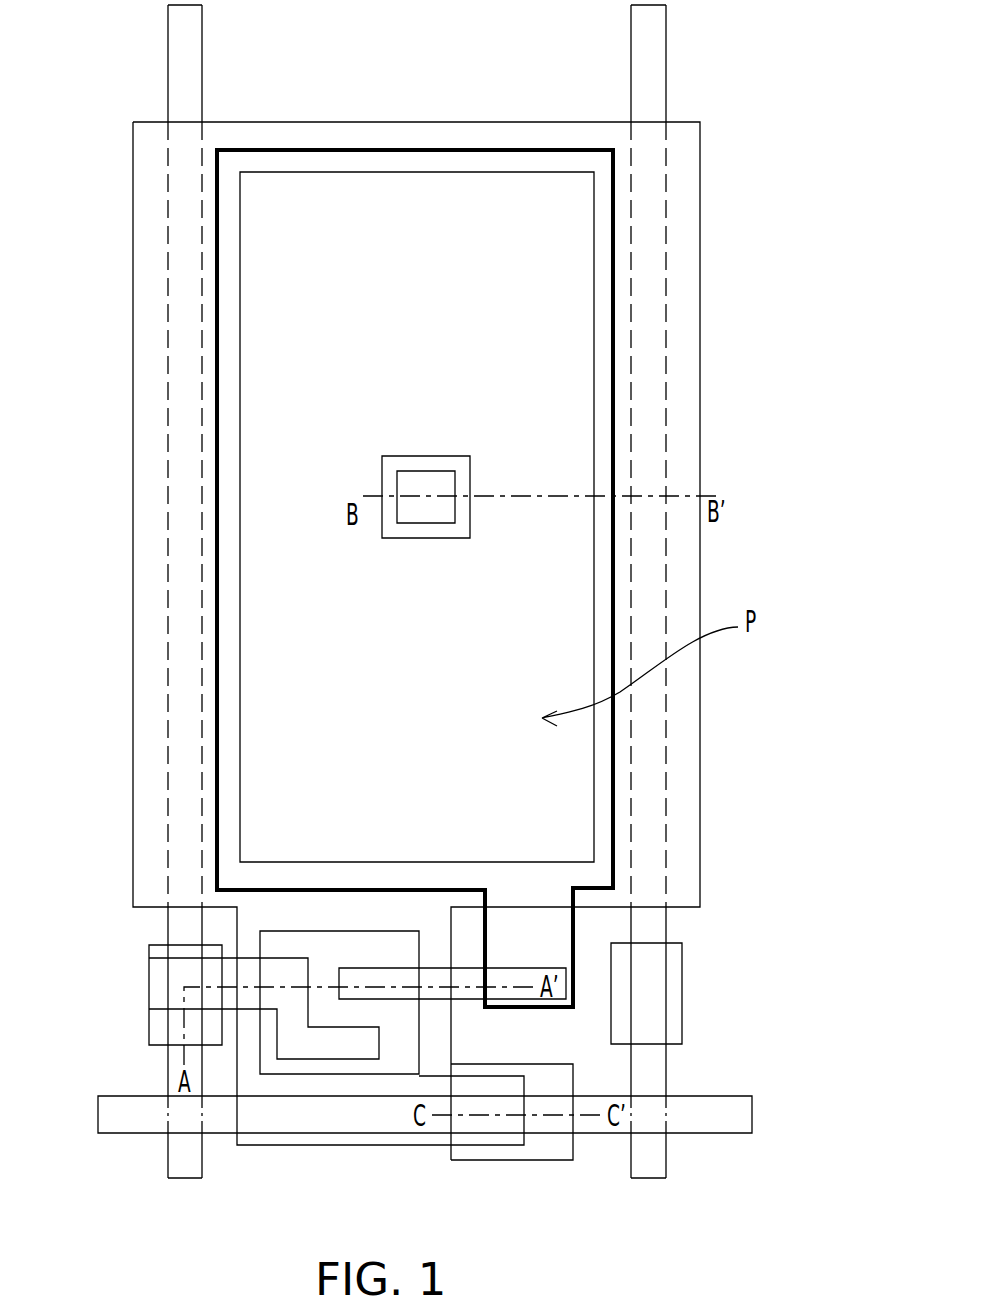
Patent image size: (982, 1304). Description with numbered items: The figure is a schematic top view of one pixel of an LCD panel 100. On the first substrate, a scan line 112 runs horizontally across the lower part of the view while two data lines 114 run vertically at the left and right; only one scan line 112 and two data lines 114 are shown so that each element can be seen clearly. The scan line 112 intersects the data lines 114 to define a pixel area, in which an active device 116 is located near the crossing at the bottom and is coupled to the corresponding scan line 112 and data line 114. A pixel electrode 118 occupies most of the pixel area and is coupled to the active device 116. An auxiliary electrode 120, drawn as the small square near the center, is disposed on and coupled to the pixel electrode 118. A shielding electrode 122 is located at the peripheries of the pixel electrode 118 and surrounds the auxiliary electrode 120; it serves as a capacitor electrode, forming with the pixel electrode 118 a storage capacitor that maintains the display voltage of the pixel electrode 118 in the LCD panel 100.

The LCD panel 100 is at (791, 1229).
The scan line 112 is at (468, 1097).
The data line 114 is at (364, 591).
The active device 116 is at (357, 1075).
The pixel electrode 118 is at (458, 641).
The auxiliary electrode 120 is at (572, 461).
The shielding electrode 122 is at (500, 578).